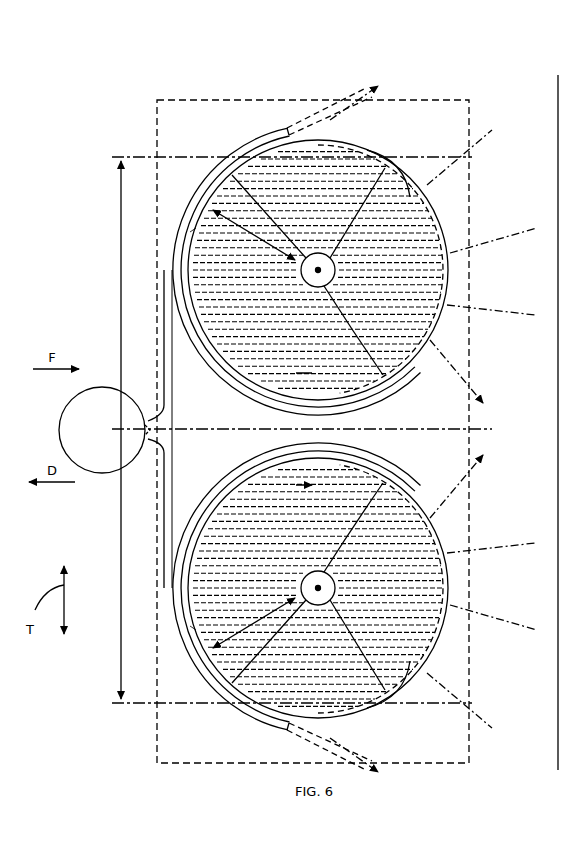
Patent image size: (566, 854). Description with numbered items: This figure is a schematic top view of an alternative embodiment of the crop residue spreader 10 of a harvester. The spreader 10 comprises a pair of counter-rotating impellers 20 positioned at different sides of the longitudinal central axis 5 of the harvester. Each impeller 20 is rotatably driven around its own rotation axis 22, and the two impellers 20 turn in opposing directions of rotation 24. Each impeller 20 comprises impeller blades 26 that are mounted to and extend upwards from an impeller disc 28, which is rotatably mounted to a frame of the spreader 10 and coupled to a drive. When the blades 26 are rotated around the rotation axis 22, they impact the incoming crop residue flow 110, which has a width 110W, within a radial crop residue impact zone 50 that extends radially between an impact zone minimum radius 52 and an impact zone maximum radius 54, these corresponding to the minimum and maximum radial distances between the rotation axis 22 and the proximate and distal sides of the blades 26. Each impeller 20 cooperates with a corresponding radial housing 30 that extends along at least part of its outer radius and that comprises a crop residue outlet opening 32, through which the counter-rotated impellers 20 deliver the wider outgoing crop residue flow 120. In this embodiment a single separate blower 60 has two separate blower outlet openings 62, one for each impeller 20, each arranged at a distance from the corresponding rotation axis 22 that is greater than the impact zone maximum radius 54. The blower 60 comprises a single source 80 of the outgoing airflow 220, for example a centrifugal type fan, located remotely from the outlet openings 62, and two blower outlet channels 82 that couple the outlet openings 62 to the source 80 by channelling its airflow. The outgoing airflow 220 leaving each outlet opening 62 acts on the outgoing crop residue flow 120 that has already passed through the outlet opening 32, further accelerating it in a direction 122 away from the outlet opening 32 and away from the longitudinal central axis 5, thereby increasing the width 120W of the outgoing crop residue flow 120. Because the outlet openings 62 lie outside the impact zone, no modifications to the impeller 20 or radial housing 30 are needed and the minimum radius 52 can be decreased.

The longitudinal central axis 5 is at (456, 426).
The crop residue spreader 10 is at (176, 106).
The impeller 20 is at (268, 399).
The rotation axis 22 is at (304, 281).
The direction of rotation 24 is at (248, 337).
The impeller blade 26 is at (195, 258).
The impeller disc 28 is at (190, 232).
The radial housing 30 is at (236, 398).
The crop residue outlet opening 32 is at (463, 263).
The radial crop residue impact zone 50 is at (228, 176).
The impact zone minimum radius 52 is at (232, 172).
The impact zone maximum radius 54 is at (236, 158).
The separate blower 60 is at (103, 384).
The separate blower outlet opening 62 is at (292, 121).
The source 80 is at (108, 474).
The blower outlet channel 82 is at (163, 356).
The incoming crop residue flow 110 is at (143, 164).
The width of the incoming crop residue flow 110W is at (98, 430).
The outgoing crop residue flow 120 is at (474, 168).
The width of the outgoing crop residue flow 120W is at (556, 210).
The direction of further acceleration 122 is at (344, 118).
The outgoing airflow 220 is at (300, 118).